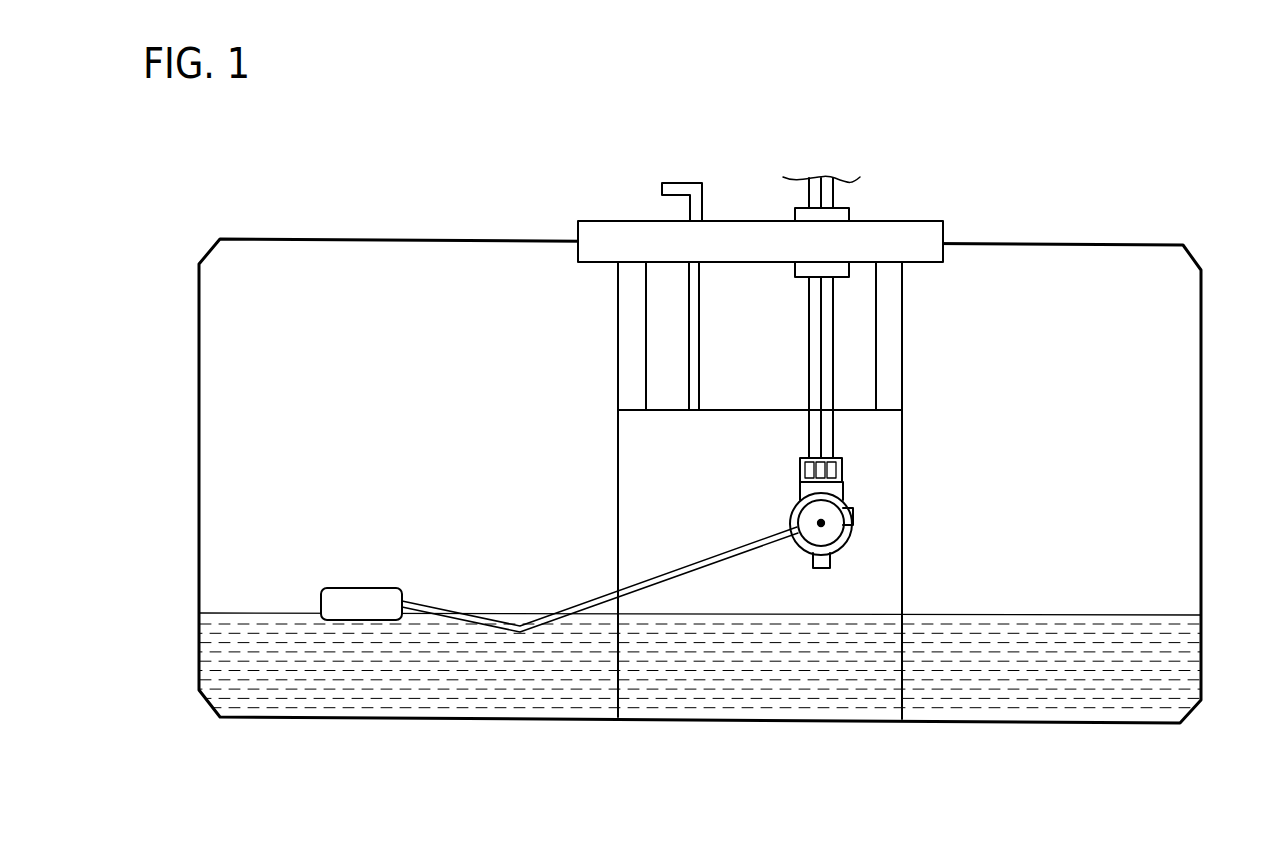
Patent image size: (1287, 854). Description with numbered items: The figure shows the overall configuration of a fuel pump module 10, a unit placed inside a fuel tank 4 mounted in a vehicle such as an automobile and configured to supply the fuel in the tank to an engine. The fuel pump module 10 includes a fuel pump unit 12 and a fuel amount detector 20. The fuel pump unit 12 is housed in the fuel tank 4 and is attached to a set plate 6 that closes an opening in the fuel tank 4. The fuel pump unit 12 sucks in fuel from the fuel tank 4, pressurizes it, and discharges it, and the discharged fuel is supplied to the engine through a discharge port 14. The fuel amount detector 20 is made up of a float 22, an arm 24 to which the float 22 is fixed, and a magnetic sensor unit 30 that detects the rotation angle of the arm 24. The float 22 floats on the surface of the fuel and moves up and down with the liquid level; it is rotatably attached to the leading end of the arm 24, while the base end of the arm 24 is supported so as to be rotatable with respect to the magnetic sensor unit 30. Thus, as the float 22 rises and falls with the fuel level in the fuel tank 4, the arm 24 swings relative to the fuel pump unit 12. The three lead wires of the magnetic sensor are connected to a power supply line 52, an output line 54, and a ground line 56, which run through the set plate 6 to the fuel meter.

The fuel tank 4 is at (1201, 508).
The set plate 6 is at (916, 228).
The fuel pump module 10 is at (541, 92).
The fuel pump unit 12 is at (638, 423).
The discharge port 14 is at (672, 183).
The fuel amount detector 20 is at (639, 525).
The float 22 is at (360, 594).
The arm 24 is at (660, 572).
The magnetic sensor unit 30 is at (842, 446).
The power supply line 52 is at (808, 337).
The output line 54 is at (823, 318).
The ground line 56 is at (835, 357).